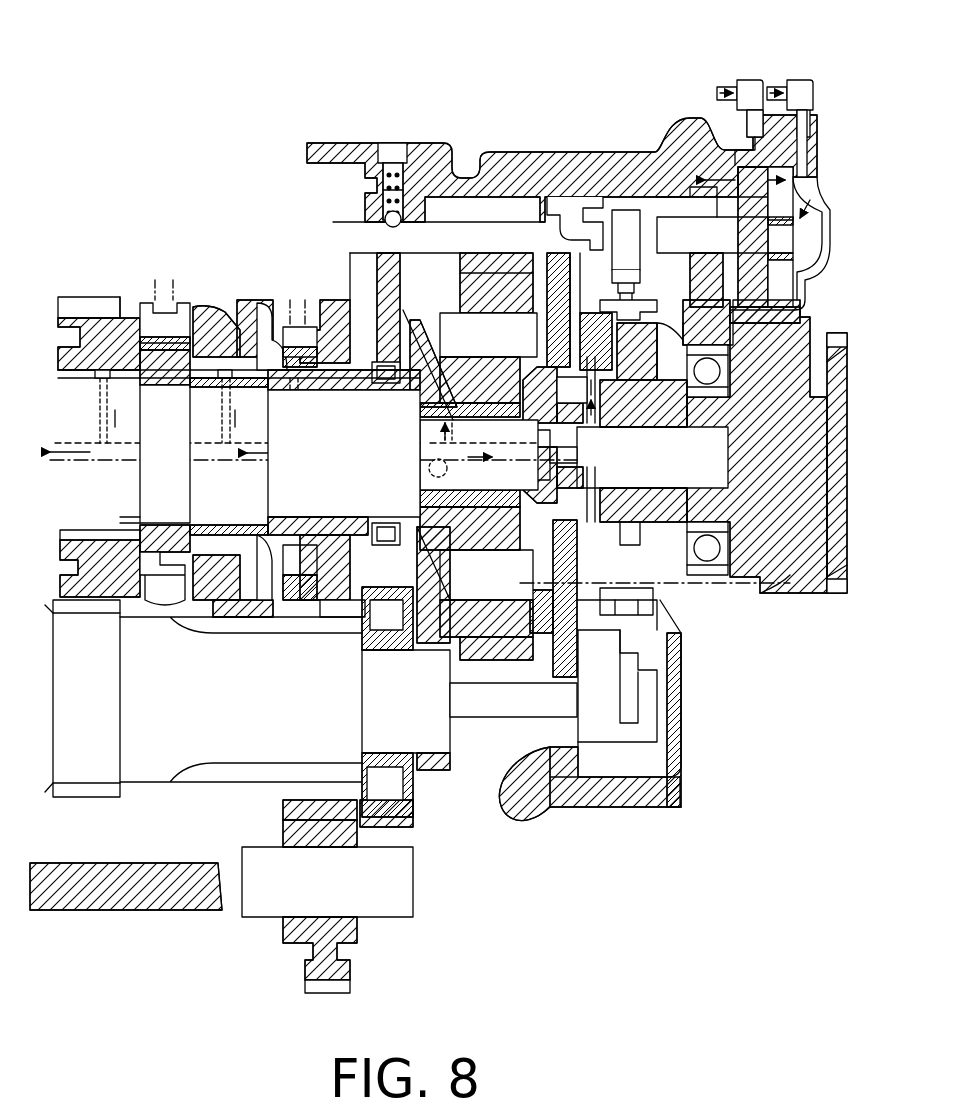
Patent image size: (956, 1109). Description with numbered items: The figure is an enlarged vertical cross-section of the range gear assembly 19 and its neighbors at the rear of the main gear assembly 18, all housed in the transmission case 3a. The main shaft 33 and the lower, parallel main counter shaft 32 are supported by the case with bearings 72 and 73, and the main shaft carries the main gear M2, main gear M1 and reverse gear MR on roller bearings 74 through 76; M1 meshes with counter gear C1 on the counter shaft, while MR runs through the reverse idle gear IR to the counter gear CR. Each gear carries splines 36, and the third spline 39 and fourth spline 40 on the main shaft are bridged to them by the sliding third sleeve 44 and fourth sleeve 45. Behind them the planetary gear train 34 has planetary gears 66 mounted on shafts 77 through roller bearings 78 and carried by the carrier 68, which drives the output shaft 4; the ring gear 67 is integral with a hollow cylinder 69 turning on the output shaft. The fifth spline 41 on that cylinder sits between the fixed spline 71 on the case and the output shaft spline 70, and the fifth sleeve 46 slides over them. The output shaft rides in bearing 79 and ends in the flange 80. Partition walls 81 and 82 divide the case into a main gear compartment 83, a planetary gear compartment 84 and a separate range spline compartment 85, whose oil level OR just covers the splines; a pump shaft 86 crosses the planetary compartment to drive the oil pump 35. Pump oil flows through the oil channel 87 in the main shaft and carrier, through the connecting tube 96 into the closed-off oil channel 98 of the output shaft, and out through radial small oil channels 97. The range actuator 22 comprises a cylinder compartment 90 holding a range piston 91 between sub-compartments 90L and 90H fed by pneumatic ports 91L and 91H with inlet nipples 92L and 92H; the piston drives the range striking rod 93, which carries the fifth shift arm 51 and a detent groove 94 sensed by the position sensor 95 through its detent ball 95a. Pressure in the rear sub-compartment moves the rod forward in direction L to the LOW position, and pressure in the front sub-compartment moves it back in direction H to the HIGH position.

The transmission case 3a is at (323, 133).
The output shaft 4 is at (790, 470).
The main gear assembly 18 is at (200, 250).
The range gear assembly 19 is at (560, 125).
The range actuator 22 is at (820, 107).
The main counter shaft 32 is at (145, 780).
The main shaft 33 is at (85, 480).
The planetary gear train 34 is at (488, 240).
The oil pump 35 is at (588, 728).
The splines 36 is at (100, 297).
The third spline 39 is at (143, 300).
The fourth spline 40 is at (268, 310).
The fifth spline 41 is at (665, 375).
The third sleeve 44 is at (183, 300).
The fourth sleeve 45 is at (300, 325).
The fifth sleeve 46 is at (640, 295).
The fifth shift arm 51 is at (560, 190).
The planetary gears 66 is at (417, 320).
The ring gear 67 is at (515, 250).
The carrier 68 is at (398, 360).
The hollow cylinder 69 is at (557, 435).
The output shaft spline 70 is at (670, 340).
The fixed spline 71 is at (580, 335).
The bearing 72 is at (385, 522).
The bearing 73 is at (388, 645).
The roller bearing 74 is at (128, 535).
The roller bearing 75 is at (237, 525).
The roller bearing 76 is at (333, 525).
The shafts 77 is at (523, 350).
The roller bearings 78 is at (490, 298).
The bearing 79 is at (722, 372).
The flange 80 is at (840, 375).
The partition wall 81 is at (370, 305).
The partition wall 82 is at (578, 223).
The main gear compartment 83 is at (245, 270).
The planetary gear compartment 84 is at (457, 240).
The range spline compartment 85 is at (620, 190).
The pump shaft 86 is at (473, 713).
The oil channel 87 is at (358, 455).
The cylinder compartment 90 is at (815, 205).
The front sub-compartment 90H is at (730, 180).
The rear sub-compartment 90L is at (808, 240).
The range piston 91 is at (808, 283).
The pneumatic port 91H is at (740, 130).
The pneumatic port 91L is at (810, 150).
The inlet nipple 92H is at (745, 78).
The inlet nipple 92L is at (800, 78).
The range striking rod 93 is at (717, 253).
The detent groove 94 is at (385, 223).
The position sensor 95 is at (395, 145).
The detent ball 95a is at (383, 198).
The connecting tube 96 is at (585, 458).
The small oil channels 97 is at (628, 392).
The oil channel 98 is at (697, 470).
The main gear M1 is at (203, 523).
The main gear M2 is at (70, 570).
The main reverse gear MR is at (293, 525).
The counter gear C1 is at (228, 782).
The reverse counter gear CR is at (300, 775).
The reverse idle gear IR is at (300, 948).
The oil level OR is at (778, 590).
The HIGH position HIGH is at (720, 80).
The LOW position LOW is at (775, 80).
The low direction L is at (716, 198).
The high direction H is at (789, 199).